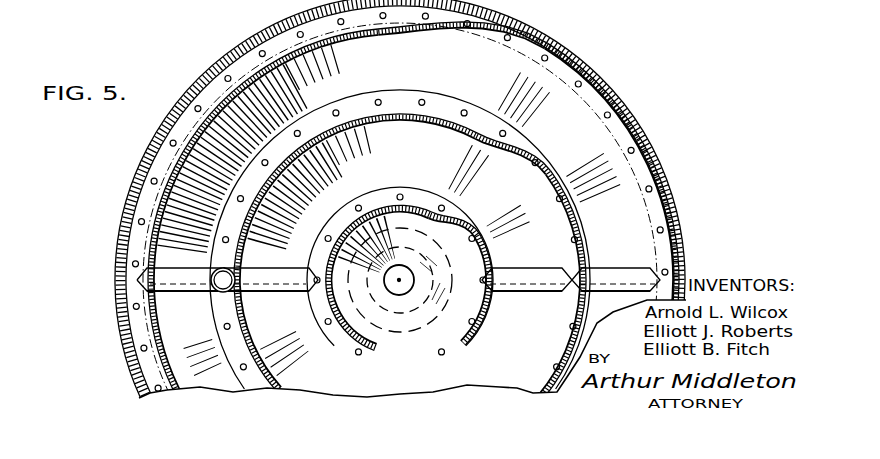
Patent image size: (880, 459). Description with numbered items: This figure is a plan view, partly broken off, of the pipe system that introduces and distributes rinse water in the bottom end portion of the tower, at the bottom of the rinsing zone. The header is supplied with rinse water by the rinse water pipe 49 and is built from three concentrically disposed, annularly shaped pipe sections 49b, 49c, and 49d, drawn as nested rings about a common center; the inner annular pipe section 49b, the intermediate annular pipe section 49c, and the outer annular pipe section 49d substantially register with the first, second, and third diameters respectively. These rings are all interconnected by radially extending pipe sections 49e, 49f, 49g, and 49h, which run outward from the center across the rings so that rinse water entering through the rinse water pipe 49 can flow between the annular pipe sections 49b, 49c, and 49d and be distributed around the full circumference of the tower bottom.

The rinse water pipe 49 is at (219, 266).
The annular pipe section 49b is at (394, 192).
The annular pipe section 49c is at (428, 104).
The annular pipe section 49d is at (275, 40).
The radially extending pipe section 49e is at (175, 291).
The radially extending pipe section 49f is at (279, 291).
The radially extending pipe section 49g is at (526, 292).
The radially extending pipe section 49h is at (612, 268).